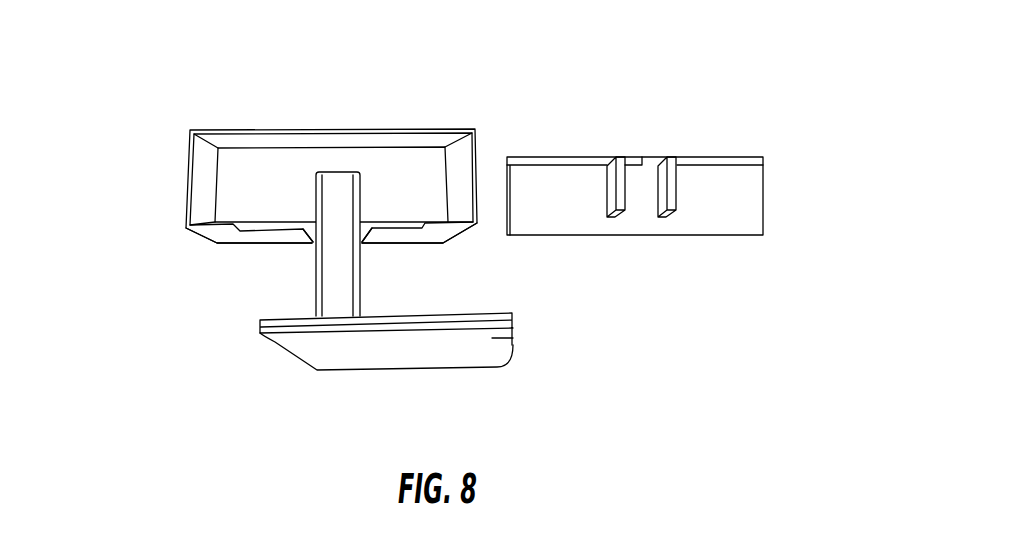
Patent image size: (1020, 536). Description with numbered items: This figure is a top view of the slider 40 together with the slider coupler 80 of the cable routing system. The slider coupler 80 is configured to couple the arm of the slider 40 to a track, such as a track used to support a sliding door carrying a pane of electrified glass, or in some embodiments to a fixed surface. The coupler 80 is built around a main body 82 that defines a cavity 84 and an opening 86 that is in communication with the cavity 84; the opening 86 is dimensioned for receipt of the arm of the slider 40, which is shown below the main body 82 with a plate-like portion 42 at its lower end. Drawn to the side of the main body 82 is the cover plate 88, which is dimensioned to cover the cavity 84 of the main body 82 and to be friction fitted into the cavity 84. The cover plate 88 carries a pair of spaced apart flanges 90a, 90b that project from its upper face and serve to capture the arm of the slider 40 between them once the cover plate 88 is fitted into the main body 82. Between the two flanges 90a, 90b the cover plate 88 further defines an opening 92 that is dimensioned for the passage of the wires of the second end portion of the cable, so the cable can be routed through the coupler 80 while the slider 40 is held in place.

The slider coupler 80 is at (461, 189).
The main body 82 is at (210, 247).
The cavity 84 is at (212, 173).
The opening 86 is at (317, 245).
The cover plate 88 is at (697, 204).
The flange 90a is at (608, 198).
The flange 90b is at (673, 182).
The opening 92 is at (637, 140).
The slider 40 is at (386, 326).
The base plate 42 is at (450, 352).